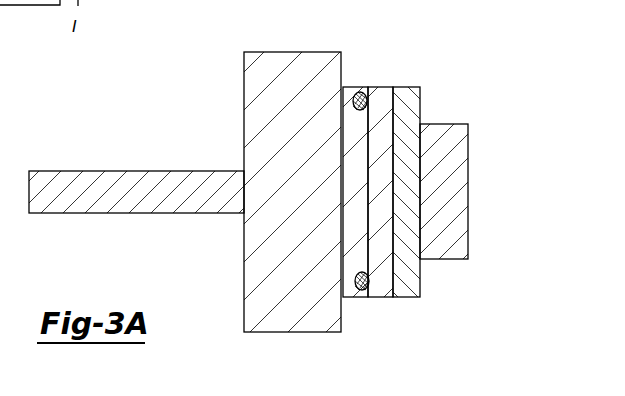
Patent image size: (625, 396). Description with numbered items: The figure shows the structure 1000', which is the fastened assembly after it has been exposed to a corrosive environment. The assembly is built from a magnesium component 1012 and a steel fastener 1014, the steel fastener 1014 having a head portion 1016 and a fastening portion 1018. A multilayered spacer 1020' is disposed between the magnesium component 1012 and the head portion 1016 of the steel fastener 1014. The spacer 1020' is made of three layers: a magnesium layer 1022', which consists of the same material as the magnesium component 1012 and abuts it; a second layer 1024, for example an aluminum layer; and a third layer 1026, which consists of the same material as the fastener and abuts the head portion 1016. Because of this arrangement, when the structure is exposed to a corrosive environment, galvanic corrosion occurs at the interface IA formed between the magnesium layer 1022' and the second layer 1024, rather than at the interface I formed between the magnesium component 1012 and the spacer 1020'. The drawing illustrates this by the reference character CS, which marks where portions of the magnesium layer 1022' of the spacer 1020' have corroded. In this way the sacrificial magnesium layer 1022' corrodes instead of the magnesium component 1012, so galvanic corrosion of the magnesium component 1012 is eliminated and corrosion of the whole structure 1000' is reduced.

The structure 1000' is at (488, 15).
The magnesium component 1012 is at (258, 90).
The steel fastener 1014 is at (474, 165).
The head portion 1016 is at (460, 190).
The fastening portion 1018 is at (73, 204).
The spacer 1020' is at (379, 170).
The magnesium layer 1022' is at (316, 192).
The second layer 1024 is at (378, 216).
The third layer 1026 is at (418, 280).
The corrosion CS is at (368, 104).
The interface I is at (343, 90).
The interface IA is at (366, 243).